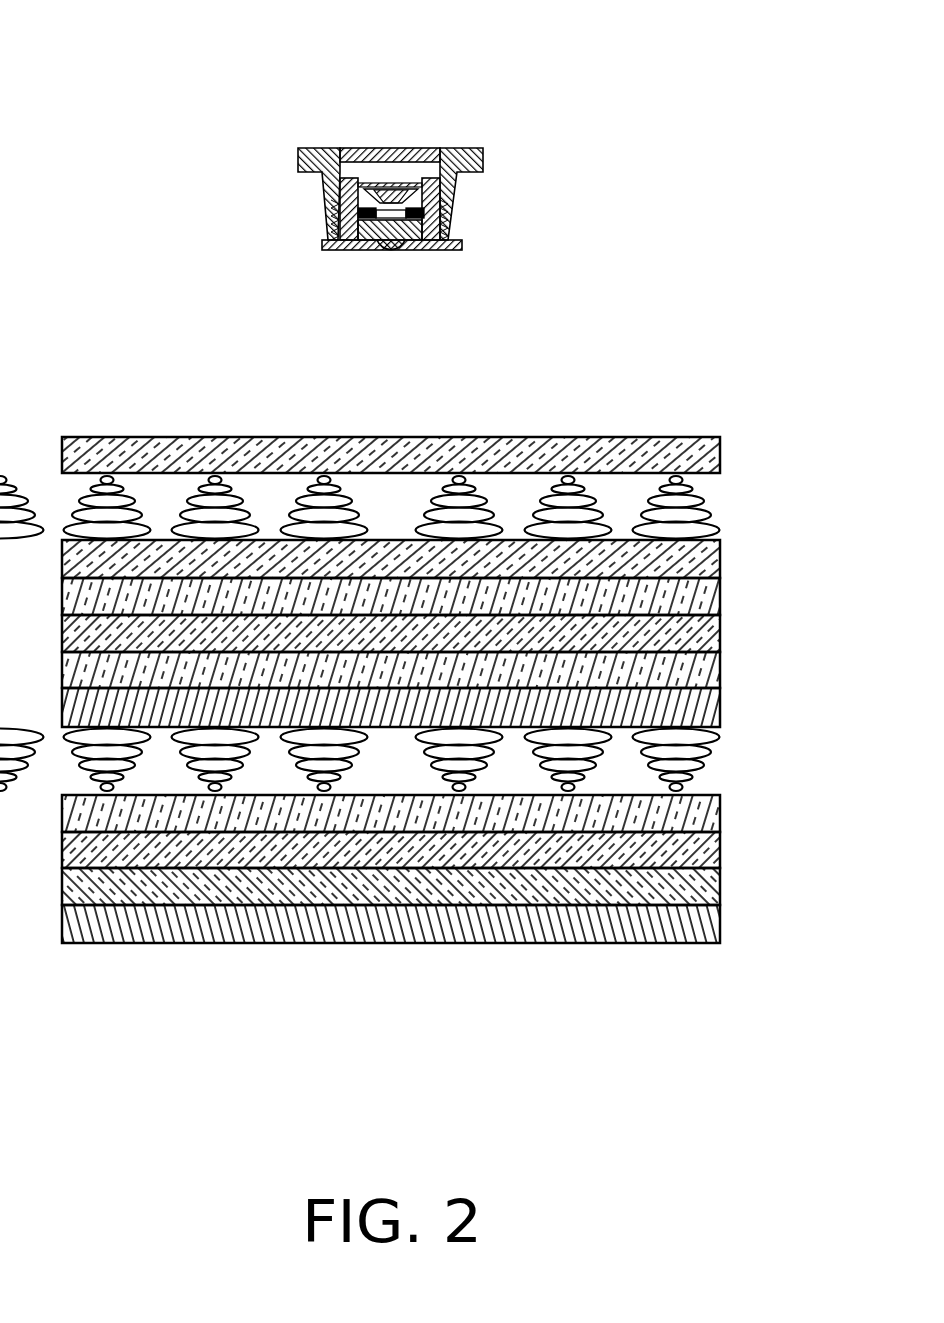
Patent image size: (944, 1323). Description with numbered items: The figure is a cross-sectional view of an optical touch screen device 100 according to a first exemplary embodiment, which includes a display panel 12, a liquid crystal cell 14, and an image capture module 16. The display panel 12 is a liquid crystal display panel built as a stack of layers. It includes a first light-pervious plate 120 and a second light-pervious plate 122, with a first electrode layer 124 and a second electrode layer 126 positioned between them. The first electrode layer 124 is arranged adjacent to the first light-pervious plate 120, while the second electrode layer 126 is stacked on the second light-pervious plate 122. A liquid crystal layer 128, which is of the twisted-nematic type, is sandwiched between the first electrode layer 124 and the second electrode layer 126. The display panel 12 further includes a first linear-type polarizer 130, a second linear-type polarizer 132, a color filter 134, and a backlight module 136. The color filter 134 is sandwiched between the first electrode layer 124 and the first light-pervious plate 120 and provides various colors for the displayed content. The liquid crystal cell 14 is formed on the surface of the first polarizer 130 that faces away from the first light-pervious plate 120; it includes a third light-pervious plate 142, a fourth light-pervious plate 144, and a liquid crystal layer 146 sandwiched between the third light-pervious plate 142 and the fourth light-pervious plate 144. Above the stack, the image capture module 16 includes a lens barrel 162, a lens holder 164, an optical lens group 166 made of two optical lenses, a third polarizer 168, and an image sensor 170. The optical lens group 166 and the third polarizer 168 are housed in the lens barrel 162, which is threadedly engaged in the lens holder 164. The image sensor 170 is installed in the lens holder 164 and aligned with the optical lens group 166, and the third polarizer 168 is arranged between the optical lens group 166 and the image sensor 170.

The optical touch screen device 100 is at (362, 36).
The image capture module 16 is at (591, 137).
The image sensor 170 is at (440, 149).
The lens holder 164 is at (452, 172).
The third polarizer 168 is at (440, 182).
The optical lens group 166 is at (424, 224).
The lens barrel 162 is at (458, 249).
The liquid crystal cell 14 is at (803, 452).
The fourth light-pervious plate 144 is at (692, 459).
The liquid crystal layer 146 is at (690, 494).
The third light-pervious plate 142 is at (692, 559).
The display panel 12 is at (804, 598).
The first linear-type polarizer 130 is at (692, 601).
The first light-pervious plate 120 is at (692, 641).
The color filter 134 is at (692, 676).
The first electrode layer 124 is at (692, 712).
The liquid crystal layer 128 is at (690, 745).
The second electrode layer 126 is at (692, 816).
The second light-pervious plate 122 is at (692, 856).
The second linear-type polarizer 132 is at (692, 891).
The backlight module 136 is at (692, 929).